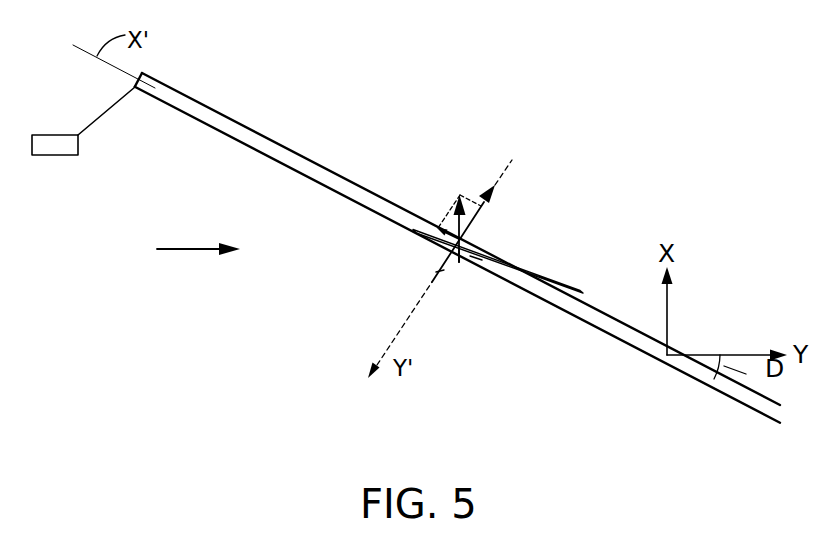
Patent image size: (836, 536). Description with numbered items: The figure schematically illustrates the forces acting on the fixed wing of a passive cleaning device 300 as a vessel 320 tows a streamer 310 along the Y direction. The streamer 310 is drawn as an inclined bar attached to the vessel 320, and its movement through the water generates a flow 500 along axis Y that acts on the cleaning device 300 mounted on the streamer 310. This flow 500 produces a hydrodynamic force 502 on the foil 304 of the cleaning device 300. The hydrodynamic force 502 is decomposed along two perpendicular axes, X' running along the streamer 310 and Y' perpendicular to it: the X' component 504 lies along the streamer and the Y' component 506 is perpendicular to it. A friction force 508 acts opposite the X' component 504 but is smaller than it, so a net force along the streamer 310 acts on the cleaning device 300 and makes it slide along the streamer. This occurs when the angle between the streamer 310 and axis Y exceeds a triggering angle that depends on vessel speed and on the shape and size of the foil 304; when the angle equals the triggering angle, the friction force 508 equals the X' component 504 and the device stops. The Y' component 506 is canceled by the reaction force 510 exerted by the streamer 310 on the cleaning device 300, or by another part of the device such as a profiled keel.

The cleaning device 300 is at (502, 256).
The foil 304 is at (477, 258).
The streamer 310 is at (232, 118).
The vessel 320 is at (57, 148).
The flow 500 is at (190, 251).
The hydrodynamic force 502 is at (453, 214).
The X' component 504 is at (441, 226).
The Y' component 506 is at (474, 222).
The friction force 508 is at (456, 259).
The reaction force 510 is at (432, 270).